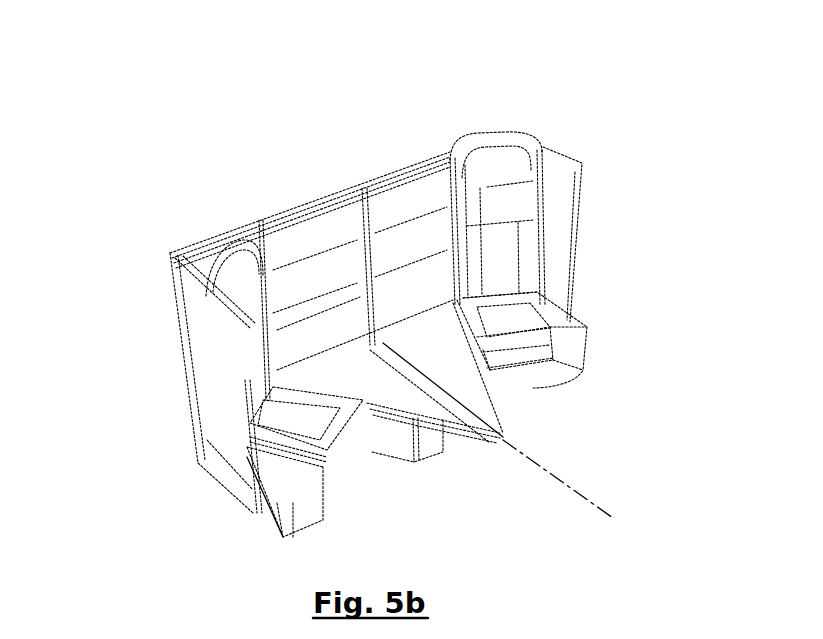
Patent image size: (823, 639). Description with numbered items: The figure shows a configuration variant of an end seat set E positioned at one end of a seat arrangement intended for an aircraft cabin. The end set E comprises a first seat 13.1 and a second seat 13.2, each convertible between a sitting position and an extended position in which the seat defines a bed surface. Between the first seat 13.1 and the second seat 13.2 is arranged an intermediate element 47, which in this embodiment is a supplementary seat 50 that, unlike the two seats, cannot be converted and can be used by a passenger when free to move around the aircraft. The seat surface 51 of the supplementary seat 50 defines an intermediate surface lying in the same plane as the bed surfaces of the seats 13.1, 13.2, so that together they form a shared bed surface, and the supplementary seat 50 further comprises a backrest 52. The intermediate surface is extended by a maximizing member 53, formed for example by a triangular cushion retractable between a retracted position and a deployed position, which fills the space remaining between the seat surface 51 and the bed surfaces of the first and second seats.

The end seat set E is at (120, 138).
The supplementary seat 50 is at (310, 238).
The intermediate element 47 is at (384, 220).
The backrest 52 is at (423, 238).
The second seat 13.2 is at (513, 237).
The first seat 13.1 is at (264, 372).
The seat surface 51 is at (358, 367).
The maximizing member 53 is at (483, 405).